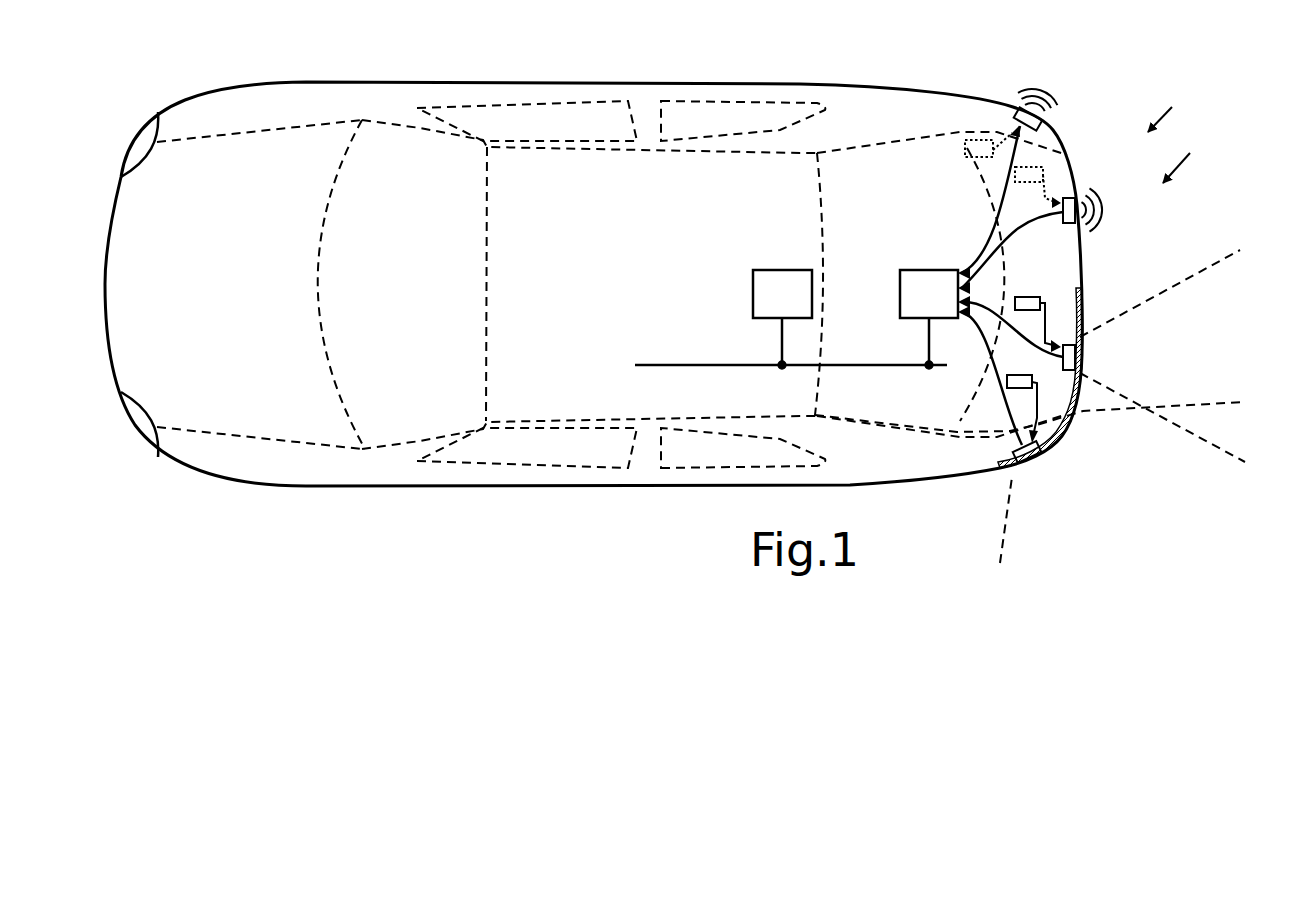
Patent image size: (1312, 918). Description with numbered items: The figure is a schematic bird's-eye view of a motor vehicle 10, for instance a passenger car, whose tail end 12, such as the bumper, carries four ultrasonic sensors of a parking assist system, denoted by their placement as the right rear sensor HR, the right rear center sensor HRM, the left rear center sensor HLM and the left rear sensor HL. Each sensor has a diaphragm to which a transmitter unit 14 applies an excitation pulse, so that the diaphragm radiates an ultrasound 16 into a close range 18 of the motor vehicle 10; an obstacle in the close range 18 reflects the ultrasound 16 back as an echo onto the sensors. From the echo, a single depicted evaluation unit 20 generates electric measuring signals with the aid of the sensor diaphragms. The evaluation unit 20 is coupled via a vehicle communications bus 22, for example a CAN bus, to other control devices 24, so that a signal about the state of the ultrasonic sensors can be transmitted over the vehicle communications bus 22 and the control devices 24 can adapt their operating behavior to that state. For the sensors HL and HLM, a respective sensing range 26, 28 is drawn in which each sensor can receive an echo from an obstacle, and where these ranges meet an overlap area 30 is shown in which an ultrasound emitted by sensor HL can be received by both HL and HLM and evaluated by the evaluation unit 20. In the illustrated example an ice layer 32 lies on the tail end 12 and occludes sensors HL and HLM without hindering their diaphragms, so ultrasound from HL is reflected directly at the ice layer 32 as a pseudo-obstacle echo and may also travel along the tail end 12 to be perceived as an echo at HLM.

The motor vehicle 10 is at (402, 82).
The tail end 12 is at (1172, 107).
The transmitter unit 14 is at (965, 147).
The ultrasound 16 is at (1018, 93).
The close range 18 is at (1187, 156).
The evaluation unit 20 is at (928, 270).
The vehicle communications bus 22 is at (683, 365).
The control devices 24 is at (785, 270).
The sensing range 26 is at (1036, 507).
The sensing range 28 is at (1174, 306).
The overlap area 30 is at (1216, 432).
The ice layer 32 is at (1003, 470).
The right rear ultrasonic sensor HR is at (1043, 118).
The right rear center ultrasonic sensor HRM is at (1078, 192).
The left rear center ultrasonic sensor HLM is at (1076, 357).
The left rear ultrasonic sensor HL is at (1040, 458).